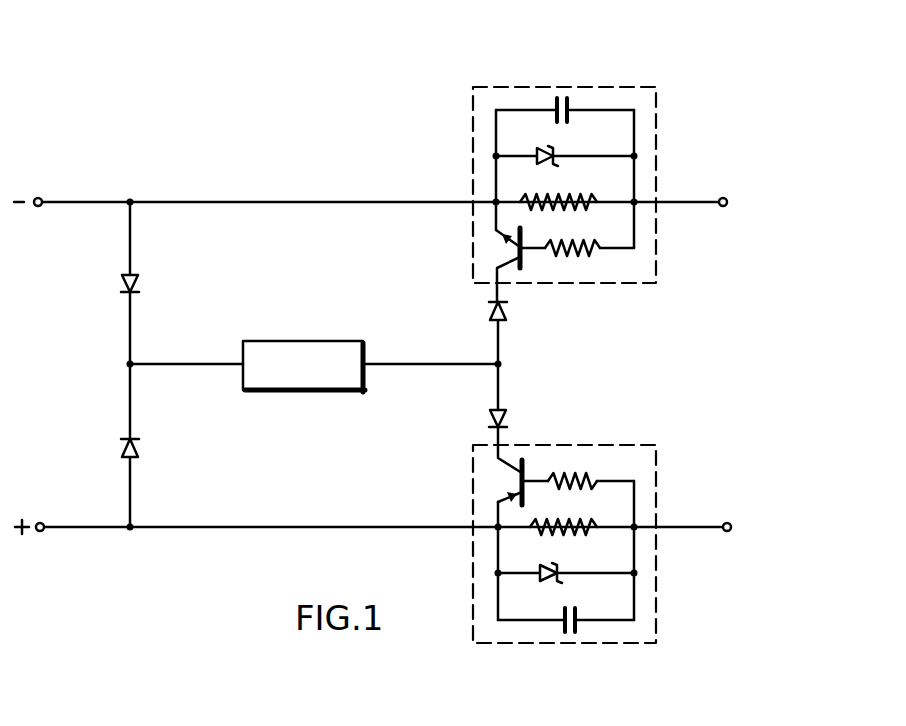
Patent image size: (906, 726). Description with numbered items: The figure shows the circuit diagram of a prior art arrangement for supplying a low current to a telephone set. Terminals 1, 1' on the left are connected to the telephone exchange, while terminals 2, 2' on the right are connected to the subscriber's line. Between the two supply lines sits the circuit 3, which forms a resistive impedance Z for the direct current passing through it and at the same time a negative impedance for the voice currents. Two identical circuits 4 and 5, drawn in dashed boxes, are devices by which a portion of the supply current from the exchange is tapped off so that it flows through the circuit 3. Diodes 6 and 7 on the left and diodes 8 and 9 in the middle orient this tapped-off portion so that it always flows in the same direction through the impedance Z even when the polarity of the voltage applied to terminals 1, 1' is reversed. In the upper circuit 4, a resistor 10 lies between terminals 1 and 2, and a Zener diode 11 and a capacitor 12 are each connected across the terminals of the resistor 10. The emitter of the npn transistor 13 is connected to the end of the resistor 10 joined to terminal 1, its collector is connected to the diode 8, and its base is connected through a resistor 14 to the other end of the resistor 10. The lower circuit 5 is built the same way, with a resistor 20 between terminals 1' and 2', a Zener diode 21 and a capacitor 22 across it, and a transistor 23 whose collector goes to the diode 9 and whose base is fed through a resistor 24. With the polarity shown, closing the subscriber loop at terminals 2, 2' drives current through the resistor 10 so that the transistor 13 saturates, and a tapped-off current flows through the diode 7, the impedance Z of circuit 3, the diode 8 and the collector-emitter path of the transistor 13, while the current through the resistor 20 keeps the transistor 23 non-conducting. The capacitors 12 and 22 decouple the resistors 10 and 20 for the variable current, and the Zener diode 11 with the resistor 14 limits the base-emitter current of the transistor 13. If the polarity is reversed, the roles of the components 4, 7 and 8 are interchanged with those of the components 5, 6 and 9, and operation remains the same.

The terminal 1 is at (35, 186).
The terminal 1' is at (39, 513).
The terminal 2 is at (710, 186).
The terminal 2' is at (716, 510).
The circuit 3 is at (316, 340).
The circuit 4 is at (473, 128).
The circuit 5 is at (473, 585).
The diode 6 is at (140, 280).
The diode 7 is at (124, 448).
The diode 8 is at (489, 303).
The diode 9 is at (491, 415).
The resistor 10 is at (578, 193).
The Zener diode 11 is at (557, 150).
The capacitor 12 is at (569, 104).
The npn transistor 13 is at (521, 258).
The resistor 14 is at (583, 240).
The resistor 20 is at (583, 520).
The Zener diode 21 is at (563, 566).
The capacitor 22 is at (580, 612).
The npn transistor 23 is at (520, 478).
The resistor 24 is at (590, 480).